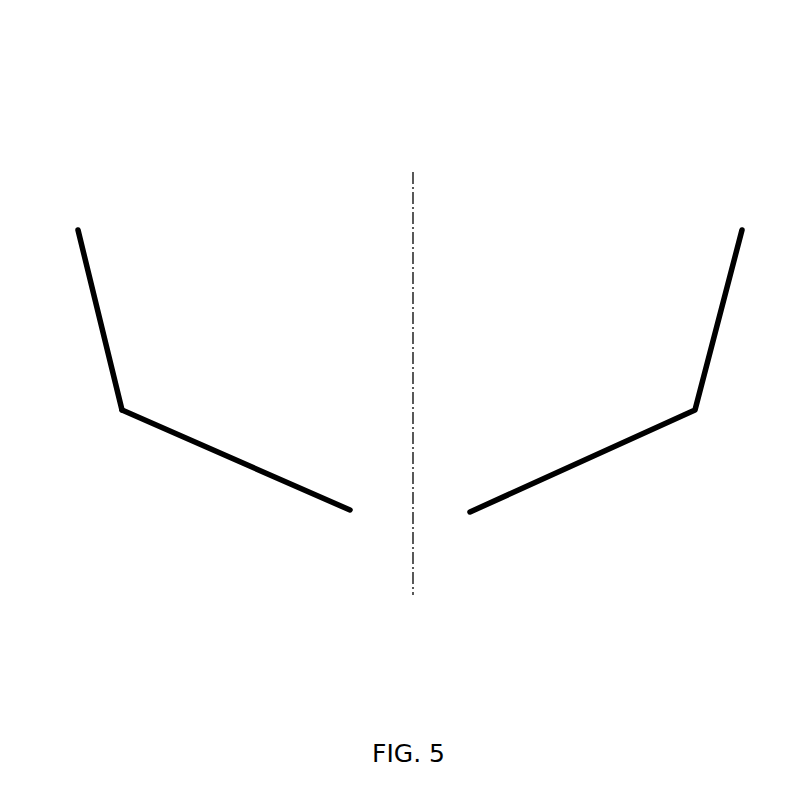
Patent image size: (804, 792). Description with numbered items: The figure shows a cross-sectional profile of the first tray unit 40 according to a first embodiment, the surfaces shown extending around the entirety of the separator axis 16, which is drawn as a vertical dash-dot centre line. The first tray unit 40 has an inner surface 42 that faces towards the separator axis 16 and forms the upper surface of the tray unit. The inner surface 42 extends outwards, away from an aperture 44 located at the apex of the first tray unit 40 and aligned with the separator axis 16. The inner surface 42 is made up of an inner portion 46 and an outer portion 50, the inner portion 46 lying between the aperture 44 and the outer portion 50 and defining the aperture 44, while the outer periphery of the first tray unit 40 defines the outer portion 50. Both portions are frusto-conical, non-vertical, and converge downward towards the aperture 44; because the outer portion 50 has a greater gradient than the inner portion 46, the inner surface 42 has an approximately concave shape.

The separator axis 16 is at (413, 232).
The first tray unit 40 is at (600, 118).
The inner surface 42 is at (202, 380).
The aperture 44 is at (396, 524).
The inner portion 46 is at (232, 463).
The outer portion 50 is at (112, 373).